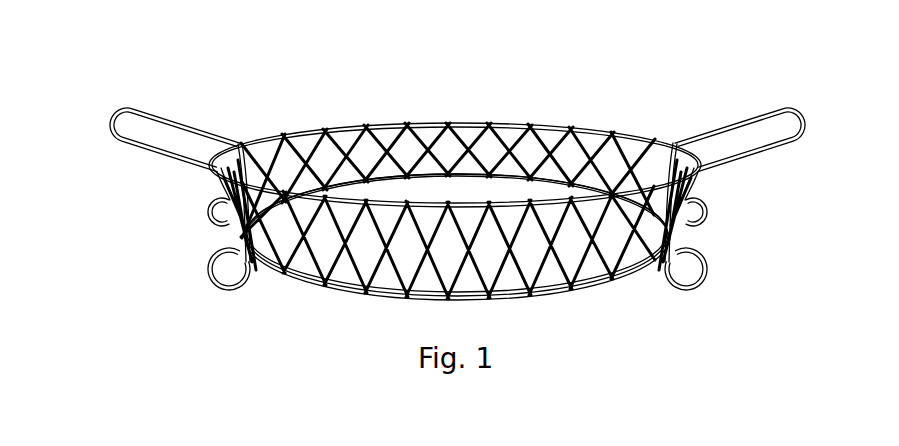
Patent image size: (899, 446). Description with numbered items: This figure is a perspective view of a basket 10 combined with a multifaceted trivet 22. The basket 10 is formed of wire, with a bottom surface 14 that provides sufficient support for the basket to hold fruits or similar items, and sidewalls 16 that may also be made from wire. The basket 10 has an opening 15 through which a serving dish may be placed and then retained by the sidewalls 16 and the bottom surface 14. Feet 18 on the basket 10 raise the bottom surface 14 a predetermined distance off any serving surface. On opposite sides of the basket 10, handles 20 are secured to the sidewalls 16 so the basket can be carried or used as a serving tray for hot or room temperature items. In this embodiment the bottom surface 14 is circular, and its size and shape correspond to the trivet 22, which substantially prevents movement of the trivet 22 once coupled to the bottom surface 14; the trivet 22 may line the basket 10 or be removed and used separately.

The basket 10 is at (493, 187).
The bottom surface 14 is at (505, 298).
The opening 15 is at (457, 217).
The sidewalls 16 is at (383, 265).
The feet 18 is at (693, 287).
The handles 20 is at (783, 147).
The trivet 22 is at (477, 182).